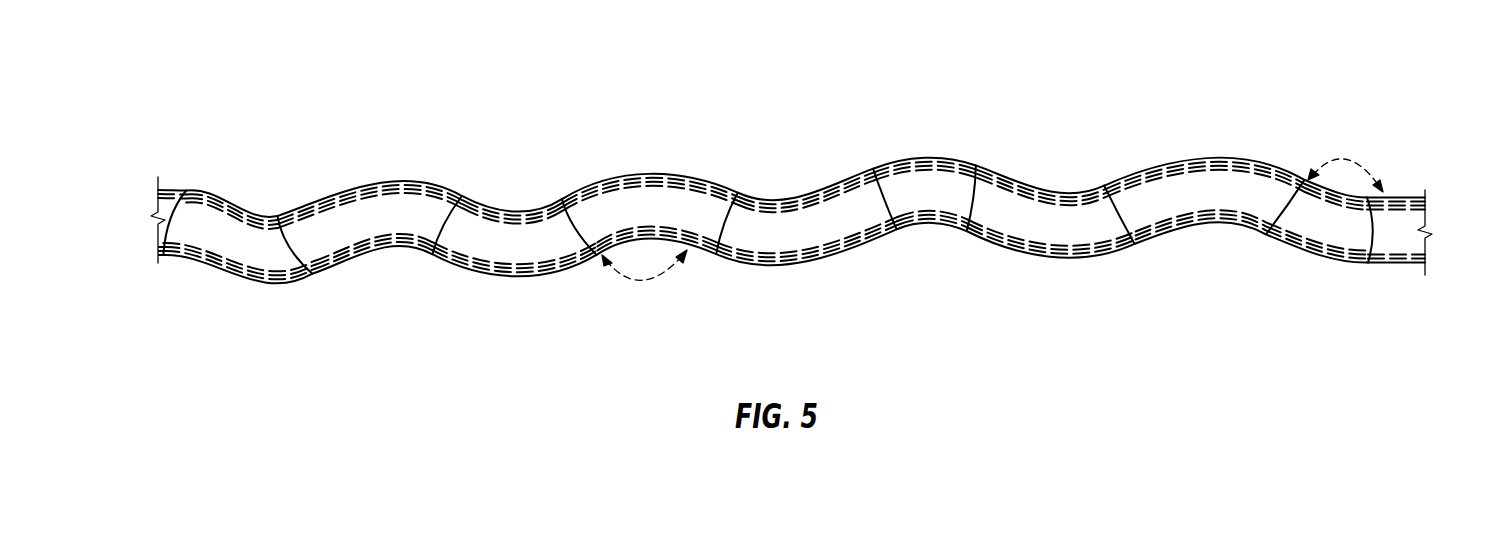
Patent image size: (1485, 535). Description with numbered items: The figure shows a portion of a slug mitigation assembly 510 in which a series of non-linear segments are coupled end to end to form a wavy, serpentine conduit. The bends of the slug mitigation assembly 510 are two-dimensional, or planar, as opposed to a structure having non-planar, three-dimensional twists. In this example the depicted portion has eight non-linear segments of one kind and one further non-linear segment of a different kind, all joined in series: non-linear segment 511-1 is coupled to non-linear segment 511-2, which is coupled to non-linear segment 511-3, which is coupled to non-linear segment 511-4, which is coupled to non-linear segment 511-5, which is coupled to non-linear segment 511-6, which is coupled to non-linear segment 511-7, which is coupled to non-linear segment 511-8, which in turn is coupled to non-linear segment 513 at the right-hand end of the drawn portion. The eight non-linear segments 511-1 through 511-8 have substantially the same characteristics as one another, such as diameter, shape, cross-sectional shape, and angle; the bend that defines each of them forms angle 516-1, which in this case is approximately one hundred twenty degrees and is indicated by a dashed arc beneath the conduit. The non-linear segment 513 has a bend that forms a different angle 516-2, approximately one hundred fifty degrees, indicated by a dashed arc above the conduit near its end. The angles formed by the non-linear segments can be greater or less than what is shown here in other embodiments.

The slug mitigation assembly 510 is at (1323, 55).
The non-linear segment 511-1 is at (257, 279).
The non-linear segment 511-2 is at (359, 187).
The non-linear segment 511-3 is at (482, 268).
The non-linear segment 511-4 is at (638, 182).
The non-linear segment 511-5 is at (763, 261).
The non-linear segment 511-6 is at (927, 161).
The non-linear segment 511-7 is at (1075, 251).
The non-linear segment 511-8 is at (1187, 159).
The non-linear segment 513 is at (1338, 253).
The angle 516-1 is at (637, 278).
The angle 516-2 is at (1351, 157).